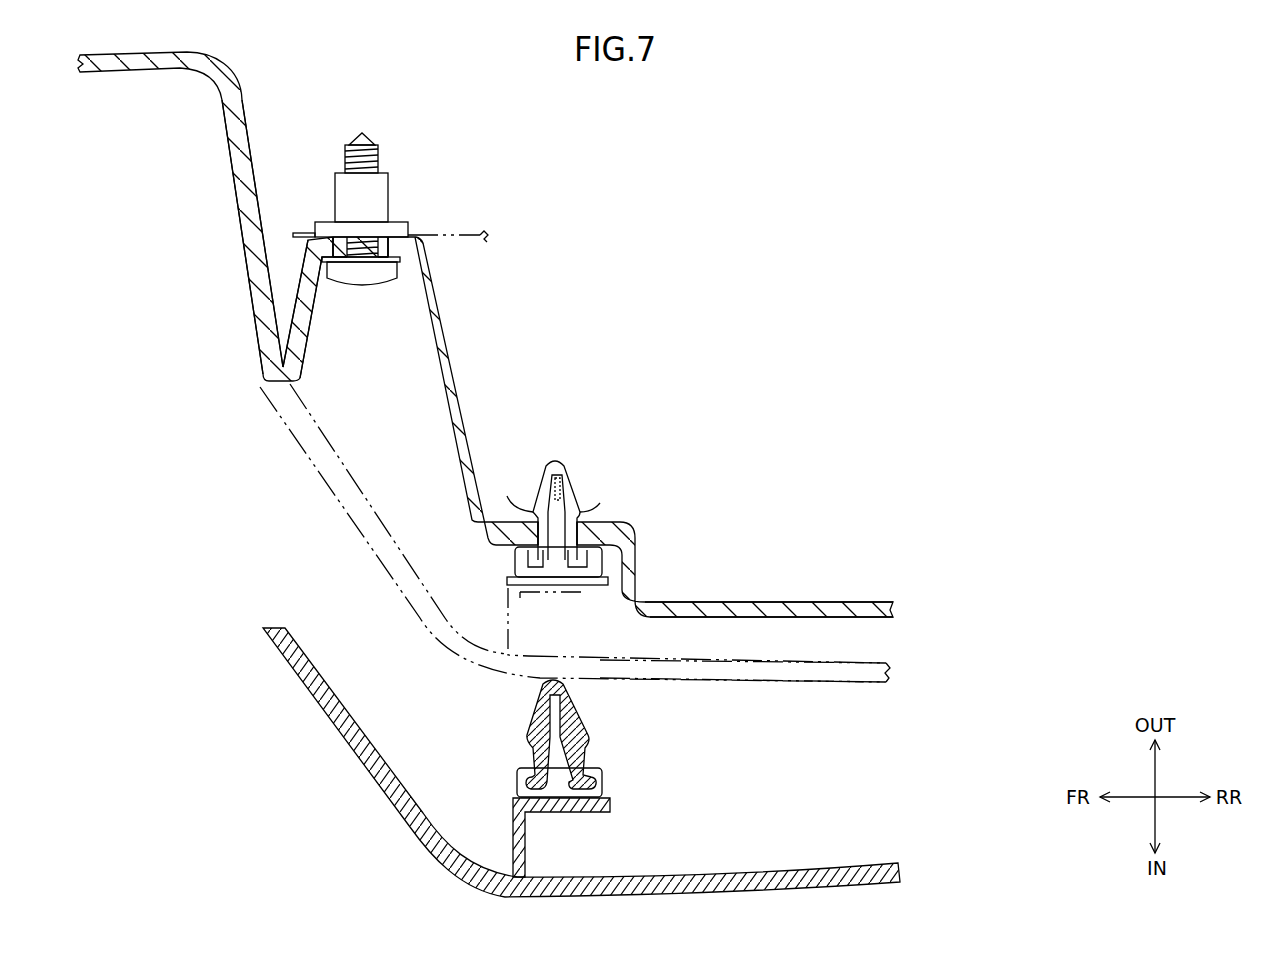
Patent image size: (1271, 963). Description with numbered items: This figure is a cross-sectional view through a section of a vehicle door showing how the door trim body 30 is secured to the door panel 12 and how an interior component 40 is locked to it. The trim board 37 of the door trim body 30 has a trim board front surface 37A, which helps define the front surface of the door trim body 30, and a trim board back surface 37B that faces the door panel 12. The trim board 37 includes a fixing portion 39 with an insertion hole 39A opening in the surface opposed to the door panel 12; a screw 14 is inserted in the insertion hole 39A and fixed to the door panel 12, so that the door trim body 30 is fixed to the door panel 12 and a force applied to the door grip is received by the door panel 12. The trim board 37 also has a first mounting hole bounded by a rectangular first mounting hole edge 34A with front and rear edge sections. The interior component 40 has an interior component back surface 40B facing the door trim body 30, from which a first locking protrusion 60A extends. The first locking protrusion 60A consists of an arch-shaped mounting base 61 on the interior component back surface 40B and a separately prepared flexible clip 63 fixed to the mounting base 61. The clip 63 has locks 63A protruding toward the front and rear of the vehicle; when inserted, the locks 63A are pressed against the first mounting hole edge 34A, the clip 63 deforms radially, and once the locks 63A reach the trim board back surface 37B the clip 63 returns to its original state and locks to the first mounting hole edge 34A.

The door panel 12 is at (453, 230).
The screw 14 is at (372, 148).
The door trim body 30 is at (803, 530).
The first mounting hole edge 34A is at (547, 535).
The trim board 37 is at (240, 213).
The trim board front surface 37A is at (870, 618).
The trim board back surface 37B is at (873, 602).
The fixing portion 39 is at (328, 245).
The insertion hole 39A is at (345, 243).
The interior component 40 is at (312, 495).
The interior component back surface 40B is at (818, 670).
The first locking protrusion 60A is at (582, 582).
The mounting base 61 is at (588, 590).
The clip 63 is at (573, 473).
The lock 63A is at (507, 496).